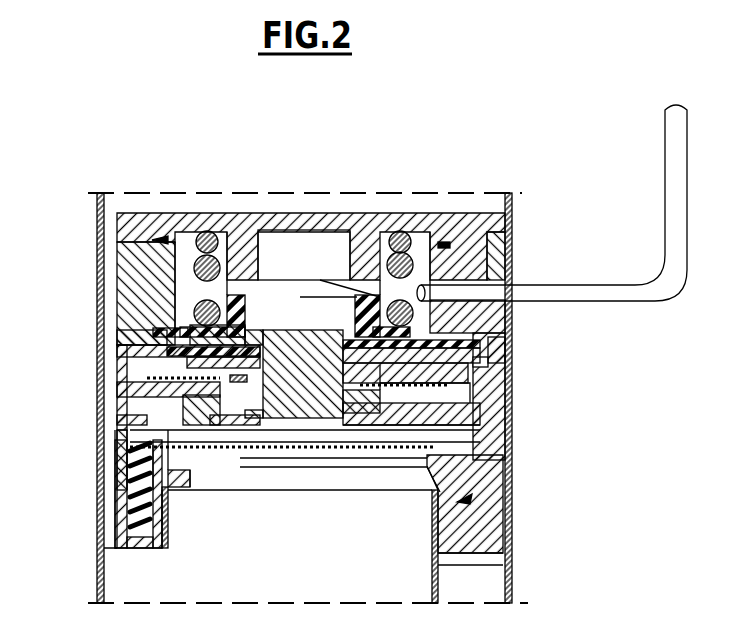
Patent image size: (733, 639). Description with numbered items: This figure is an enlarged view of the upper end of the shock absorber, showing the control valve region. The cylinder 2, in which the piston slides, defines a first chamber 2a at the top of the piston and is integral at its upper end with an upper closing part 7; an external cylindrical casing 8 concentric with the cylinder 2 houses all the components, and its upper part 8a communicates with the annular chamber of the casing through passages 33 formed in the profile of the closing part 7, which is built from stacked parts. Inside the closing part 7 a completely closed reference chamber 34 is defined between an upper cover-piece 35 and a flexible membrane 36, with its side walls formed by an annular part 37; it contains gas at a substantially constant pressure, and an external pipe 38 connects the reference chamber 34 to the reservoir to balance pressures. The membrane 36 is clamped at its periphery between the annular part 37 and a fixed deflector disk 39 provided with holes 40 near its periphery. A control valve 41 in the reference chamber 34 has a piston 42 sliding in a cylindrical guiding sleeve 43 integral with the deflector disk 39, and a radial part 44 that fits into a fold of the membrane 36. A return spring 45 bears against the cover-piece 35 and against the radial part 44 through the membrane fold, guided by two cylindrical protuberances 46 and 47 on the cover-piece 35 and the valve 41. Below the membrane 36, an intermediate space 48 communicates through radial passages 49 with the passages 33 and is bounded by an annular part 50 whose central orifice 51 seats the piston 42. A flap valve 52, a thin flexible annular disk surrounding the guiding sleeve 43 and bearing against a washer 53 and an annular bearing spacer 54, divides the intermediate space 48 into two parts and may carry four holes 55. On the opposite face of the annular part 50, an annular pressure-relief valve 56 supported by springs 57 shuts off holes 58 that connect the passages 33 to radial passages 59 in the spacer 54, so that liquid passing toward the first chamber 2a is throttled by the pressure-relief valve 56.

The cylinder 2 is at (433, 565).
The first chamber 2a is at (383, 582).
The upper closing part 7 is at (490, 498).
The external cylindrical casing 8 is at (490, 508).
The upper part of the casing 8a is at (350, 213).
The passages 33 is at (180, 280).
The reference chamber 34 is at (187, 287).
The upper cover-piece 35 is at (231, 213).
The flexible membrane 36 is at (165, 333).
The annular part 37 is at (140, 262).
The pipe 38 is at (676, 150).
The fixed deflector disk 39 is at (490, 363).
The holes 40 is at (485, 385).
The control valve 41 is at (292, 432).
The piston 42 is at (263, 400).
The cylindrical guiding sleeve 43 is at (248, 400).
The radial part 44 is at (440, 342).
The return spring 45 is at (180, 247).
The cylindrical protuberance 46 is at (470, 253).
The cylindrical protuberance 47 is at (258, 305).
The intermediate space 48 is at (375, 420).
The radial passages 49 is at (150, 378).
The annular part 50 is at (356, 428).
The central orifice 51 is at (323, 428).
The flap valve 52 is at (211, 360).
The washer 53 is at (480, 412).
The annular bearing spacer 54 is at (160, 400).
The holes 55 is at (180, 405).
The annular pressure-relief valve 56 is at (480, 455).
The springs 57 is at (150, 520).
The holes 58 is at (150, 447).
The radial passages 59 is at (135, 430).